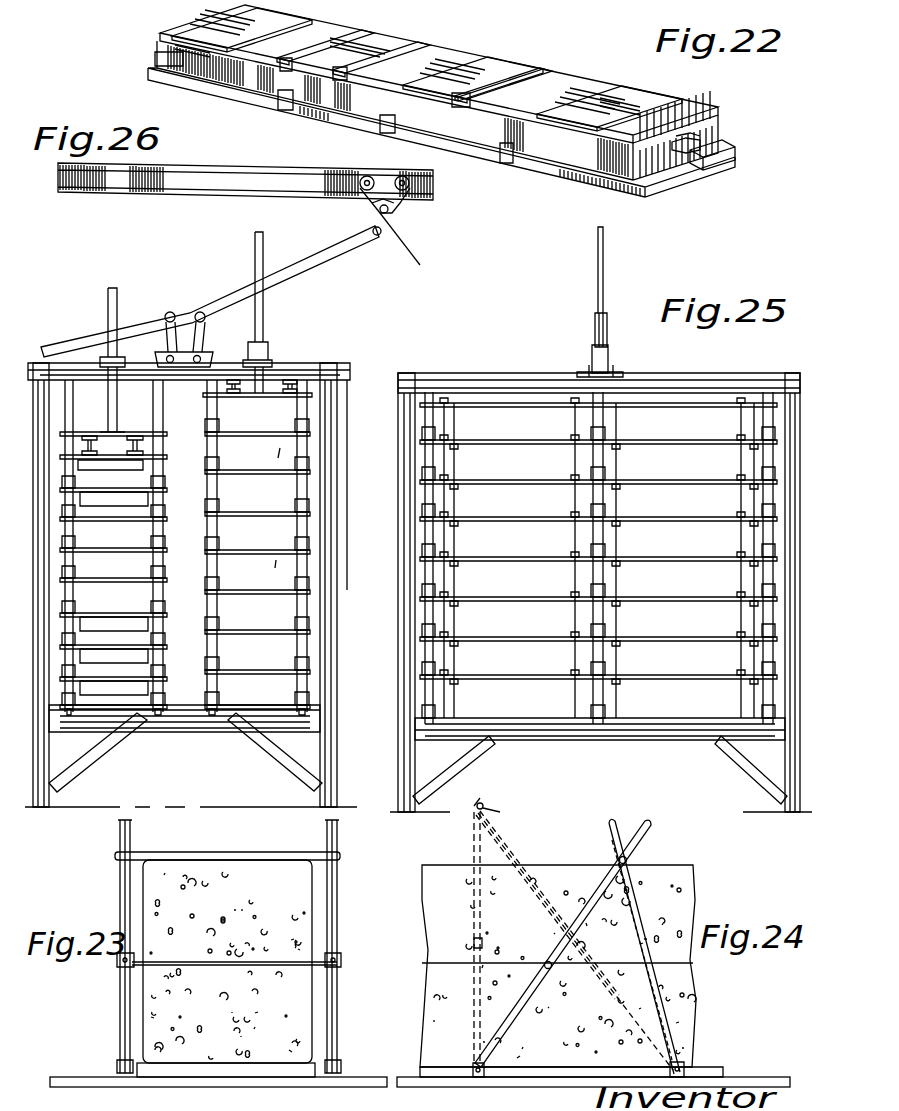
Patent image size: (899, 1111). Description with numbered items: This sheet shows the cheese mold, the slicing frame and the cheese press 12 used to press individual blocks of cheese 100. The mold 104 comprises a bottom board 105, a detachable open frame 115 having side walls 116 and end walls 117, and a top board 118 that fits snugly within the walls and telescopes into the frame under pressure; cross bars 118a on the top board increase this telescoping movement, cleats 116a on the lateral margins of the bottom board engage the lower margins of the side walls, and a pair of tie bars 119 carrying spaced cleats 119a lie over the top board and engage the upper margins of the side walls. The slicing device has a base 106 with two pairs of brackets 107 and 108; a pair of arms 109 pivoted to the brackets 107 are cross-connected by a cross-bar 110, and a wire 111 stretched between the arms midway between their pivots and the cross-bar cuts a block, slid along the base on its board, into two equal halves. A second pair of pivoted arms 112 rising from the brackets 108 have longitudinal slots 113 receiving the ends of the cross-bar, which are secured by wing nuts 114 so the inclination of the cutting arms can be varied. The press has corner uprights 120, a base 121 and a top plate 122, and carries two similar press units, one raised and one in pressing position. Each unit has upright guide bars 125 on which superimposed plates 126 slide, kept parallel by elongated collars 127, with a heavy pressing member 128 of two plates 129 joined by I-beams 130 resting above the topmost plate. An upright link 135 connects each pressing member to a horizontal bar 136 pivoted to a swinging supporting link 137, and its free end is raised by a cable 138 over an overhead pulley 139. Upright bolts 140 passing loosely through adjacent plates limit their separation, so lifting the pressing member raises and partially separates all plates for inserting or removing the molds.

In FIG. 26, the cheese press 12 is at (341, 592).
In FIG. 25, the cheese press 12 is at (517, 371).
In FIG. 23, the block of cheese 100 is at (310, 1012).
In FIG. 24, the block of cheese 100 is at (558, 966).
In FIG. 22, the mold 104 is at (729, 166).
In FIG. 26, the mold 104 is at (113, 577).
In FIG. 22, the bottom board 105 is at (545, 168).
In FIG. 23, the bottom board 105 is at (284, 1070).
In FIG. 24, the bottom board 105 is at (571, 1072).
In FIG. 23, the base 106 is at (220, 1080).
In FIG. 24, the base 106 is at (490, 1086).
In FIG. 24, the brackets 107 is at (470, 1064).
In FIG. 24, the brackets 108 is at (684, 1064).
In FIG. 23, the arms 109 is at (325, 912).
In FIG. 24, the arms 109 is at (514, 1016).
In FIG. 23, the cross-bar 110 is at (216, 846).
In FIG. 24, the cross-bar 110 is at (654, 840).
In FIG. 23, the wire 111 is at (290, 962).
In FIG. 24, the pivoted arms 112 is at (645, 927).
In FIG. 24, the slots 113 is at (640, 893).
In FIG. 24, the wing nuts 114 is at (618, 857).
In FIG. 22, the open frame 115 is at (711, 140).
In FIG. 22, the side walls 116 is at (600, 176).
In FIG. 22, the cleats 116a is at (425, 30).
In FIG. 22, the end walls 117 is at (720, 111).
In FIG. 22, the top board 118 is at (630, 96).
In FIG. 22, the cross bars 118a is at (453, 48).
In FIG. 22, the tie bars 119 is at (385, 32).
In FIG. 22, the cleats 119a is at (405, 108).
In FIG. 26, the corner uprights 120 is at (330, 722).
In FIG. 25, the corner uprights 120 is at (400, 525).
In FIG. 26, the base 121 is at (185, 722).
In FIG. 25, the base 121 is at (612, 736).
In FIG. 26, the top plate 122 is at (199, 366).
In FIG. 25, the top plate 122 is at (670, 384).
In FIG. 26, the guide bars 125 is at (305, 487).
In FIG. 25, the guide bars 125 is at (433, 450).
In FIG. 26, the plates 126 is at (244, 472).
In FIG. 25, the plates 126 is at (706, 520).
In FIG. 26, the collars 127 is at (315, 466).
In FIG. 25, the collars 127 is at (598, 572).
In FIG. 26, the pressing member 128 is at (172, 431).
In FIG. 26, the plates 129 is at (134, 432).
In FIG. 25, the plates 129 is at (612, 434).
In FIG. 26, the I-beams 130 is at (250, 392).
In FIG. 26, the link 135 is at (98, 343).
In FIG. 26, the bar 136 is at (318, 261).
In FIG. 26, the supporting link 137 is at (198, 320).
In FIG. 26, the cable 138 is at (413, 260).
In FIG. 26, the pulley 139 is at (368, 206).
In FIG. 25, the bolts 140 is at (503, 535).